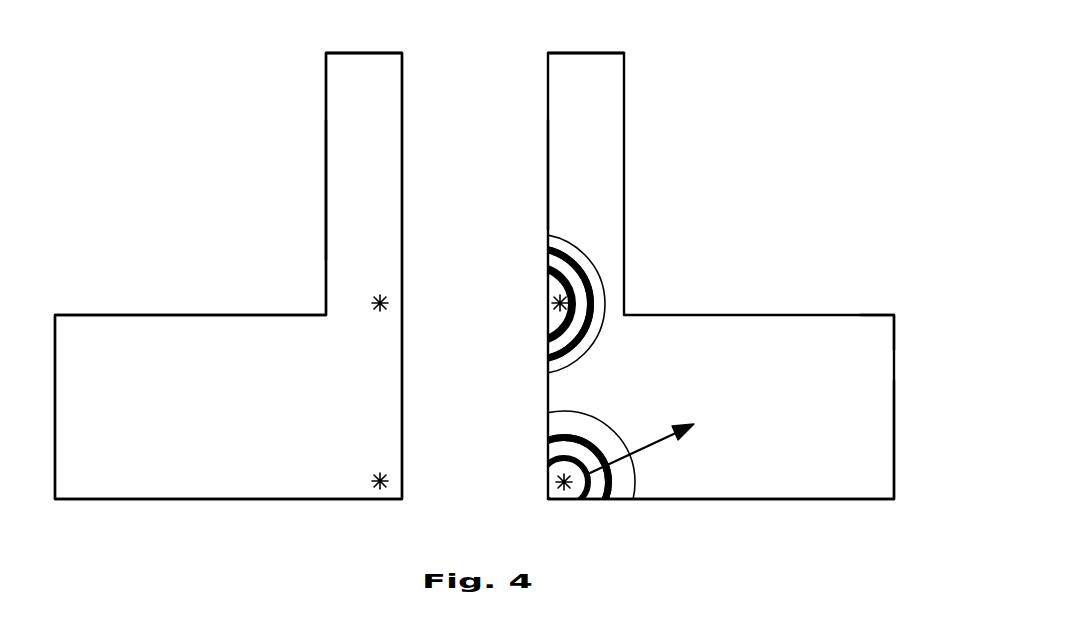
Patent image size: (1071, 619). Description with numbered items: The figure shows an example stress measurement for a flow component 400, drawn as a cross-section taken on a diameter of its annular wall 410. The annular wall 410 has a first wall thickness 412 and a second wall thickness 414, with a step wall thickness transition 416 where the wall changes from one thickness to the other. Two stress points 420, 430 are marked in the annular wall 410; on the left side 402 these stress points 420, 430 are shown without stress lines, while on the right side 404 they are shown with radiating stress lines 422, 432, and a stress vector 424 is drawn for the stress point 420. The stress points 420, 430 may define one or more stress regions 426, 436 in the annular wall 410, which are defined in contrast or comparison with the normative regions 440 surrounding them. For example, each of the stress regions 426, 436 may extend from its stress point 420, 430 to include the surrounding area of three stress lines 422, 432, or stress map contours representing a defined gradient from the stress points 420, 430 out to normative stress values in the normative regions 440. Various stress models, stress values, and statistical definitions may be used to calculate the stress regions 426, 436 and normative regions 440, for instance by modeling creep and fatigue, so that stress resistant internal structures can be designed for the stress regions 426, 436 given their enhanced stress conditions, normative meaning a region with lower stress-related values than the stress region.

The flow component 400 is at (273, 92).
The left side 402 is at (115, 298).
The right side 404 is at (758, 162).
The annular wall 410 is at (362, 52).
The first wall thickness 412 is at (624, 43).
The second wall thickness 414 is at (897, 557).
The step wall thickness transition 416 is at (893, 316).
The stress point 420 is at (384, 488).
The radiating stress lines 422 is at (606, 498).
The stress vector 424 is at (694, 424).
The stress region 426 is at (535, 410).
The stress point 430 is at (387, 300).
The radiating stress lines 432 is at (592, 298).
The stress region 436 is at (537, 233).
The normative regions 440 is at (342, 188).